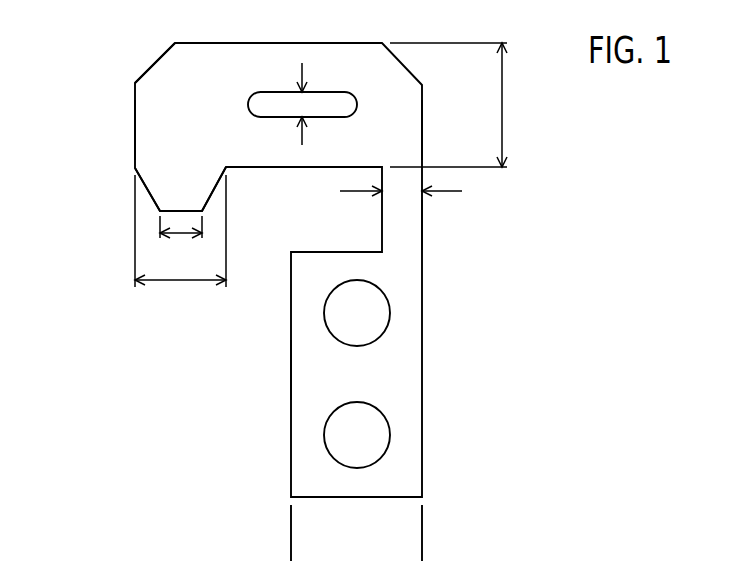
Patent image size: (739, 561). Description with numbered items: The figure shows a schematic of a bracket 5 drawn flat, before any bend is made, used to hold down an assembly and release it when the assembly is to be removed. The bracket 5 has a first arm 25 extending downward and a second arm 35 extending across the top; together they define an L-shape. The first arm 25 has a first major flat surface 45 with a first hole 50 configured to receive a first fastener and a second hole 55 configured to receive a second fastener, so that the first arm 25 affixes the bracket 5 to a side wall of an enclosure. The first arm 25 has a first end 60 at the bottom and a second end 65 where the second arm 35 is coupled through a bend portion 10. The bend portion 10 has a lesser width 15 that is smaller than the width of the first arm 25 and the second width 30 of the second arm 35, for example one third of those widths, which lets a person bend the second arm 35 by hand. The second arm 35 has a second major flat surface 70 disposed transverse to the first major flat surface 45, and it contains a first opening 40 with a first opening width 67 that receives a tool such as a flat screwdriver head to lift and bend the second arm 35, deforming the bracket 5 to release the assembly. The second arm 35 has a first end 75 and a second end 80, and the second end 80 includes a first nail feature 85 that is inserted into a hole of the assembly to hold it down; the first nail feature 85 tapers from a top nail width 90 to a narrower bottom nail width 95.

The bracket 5 is at (528, 208).
The bend portion 10 is at (398, 222).
The lesser width 15 is at (443, 193).
The first arm 25 is at (291, 372).
The second width 30 is at (502, 103).
The second arm 35 is at (268, 43).
The first opening 40 is at (268, 103).
The first major flat surface 45 is at (358, 488).
The first hole 50 is at (390, 435).
The second hole 55 is at (390, 313).
The first end 60 is at (357, 505).
The second end 65 is at (324, 238).
The first opening width 67 is at (302, 76).
The second major flat surface 70 is at (150, 130).
The first end 75 is at (428, 110).
The second end 80 is at (128, 93).
The first nail feature 85 is at (180, 183).
The top nail width 90 is at (183, 281).
The bottom nail width 95 is at (182, 234).